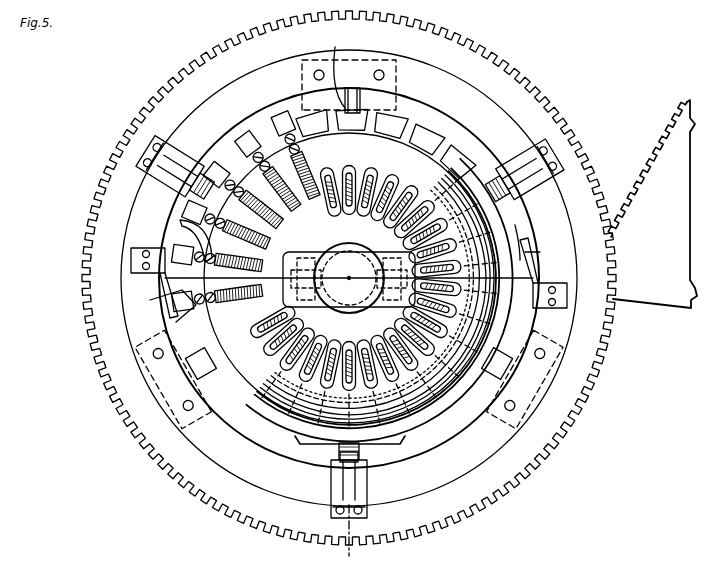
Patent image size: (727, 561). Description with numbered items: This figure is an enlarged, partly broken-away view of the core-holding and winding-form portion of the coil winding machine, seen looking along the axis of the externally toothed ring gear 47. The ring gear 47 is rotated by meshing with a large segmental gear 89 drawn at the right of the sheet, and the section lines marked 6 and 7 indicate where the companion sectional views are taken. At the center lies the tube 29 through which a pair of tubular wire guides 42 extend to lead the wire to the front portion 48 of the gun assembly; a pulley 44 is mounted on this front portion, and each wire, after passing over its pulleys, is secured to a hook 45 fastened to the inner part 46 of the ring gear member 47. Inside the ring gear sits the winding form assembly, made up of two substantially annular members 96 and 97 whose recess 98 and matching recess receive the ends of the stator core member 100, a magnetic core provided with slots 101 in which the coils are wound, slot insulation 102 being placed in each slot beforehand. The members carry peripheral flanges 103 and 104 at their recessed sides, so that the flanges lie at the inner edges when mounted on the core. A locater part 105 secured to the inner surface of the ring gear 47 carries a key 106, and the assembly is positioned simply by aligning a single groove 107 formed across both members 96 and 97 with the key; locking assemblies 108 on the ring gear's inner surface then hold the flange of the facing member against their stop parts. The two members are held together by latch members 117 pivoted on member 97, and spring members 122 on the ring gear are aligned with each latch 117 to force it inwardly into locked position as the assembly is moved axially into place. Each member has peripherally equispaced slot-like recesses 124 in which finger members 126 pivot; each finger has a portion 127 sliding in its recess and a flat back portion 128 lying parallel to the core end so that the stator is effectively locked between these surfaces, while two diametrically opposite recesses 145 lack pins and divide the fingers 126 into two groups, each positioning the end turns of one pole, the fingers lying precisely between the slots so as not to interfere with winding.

The section line 6- 6 is at (70, 172).
The section line 7- 7 is at (392, 320).
The tube 29 is at (352, 250).
The tubular wire guides 42 is at (350, 284).
The pulley 44 is at (320, 262).
The hook 45 is at (540, 265).
The inner part of ring gear member 46 is at (565, 318).
The ring gear 47 is at (588, 360).
The front portion of the gun assembly 48 is at (322, 300).
The segmental gear 89 is at (662, 150).
The annular member 96 is at (272, 136).
The annular member 97 is at (281, 425).
The recess 98 is at (246, 142).
The stator core member 100 is at (462, 133).
The slots 101 is at (376, 180).
The slot insulation 102 is at (394, 185).
The peripheral flange 103 is at (440, 134).
The peripheral flange 104 is at (520, 238).
The locater part 105 is at (376, 66).
The key 106 is at (352, 100).
The groove 107 is at (341, 68).
The locking assemblies 108 is at (178, 403).
The latch members 117 is at (496, 180).
The spring members 122 is at (528, 182).
The slot-like recesses 124 is at (187, 217).
The finger member 126 is at (290, 360).
The finger portion 127 is at (180, 306).
The back portion 128 is at (246, 318).
The recesses 145 is at (526, 253).